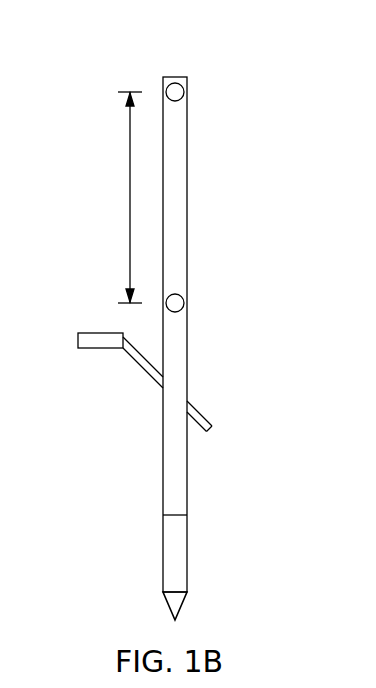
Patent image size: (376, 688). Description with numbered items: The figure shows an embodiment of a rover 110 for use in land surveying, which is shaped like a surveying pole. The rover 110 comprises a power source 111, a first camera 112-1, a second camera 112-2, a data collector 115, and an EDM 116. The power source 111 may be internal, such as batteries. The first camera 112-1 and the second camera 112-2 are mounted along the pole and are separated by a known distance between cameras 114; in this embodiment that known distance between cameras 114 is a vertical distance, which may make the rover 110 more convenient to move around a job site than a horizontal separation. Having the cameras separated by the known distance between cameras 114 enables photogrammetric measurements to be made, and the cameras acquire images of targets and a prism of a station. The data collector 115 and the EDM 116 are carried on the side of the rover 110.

The rover 110 is at (268, 52).
The power source 111 is at (163, 572).
The first camera 112-1 is at (184, 303).
The second camera 112-2 is at (184, 90).
The known distance between cameras 114 is at (129, 200).
The data collector 115 is at (140, 366).
The EDM 116 is at (88, 333).